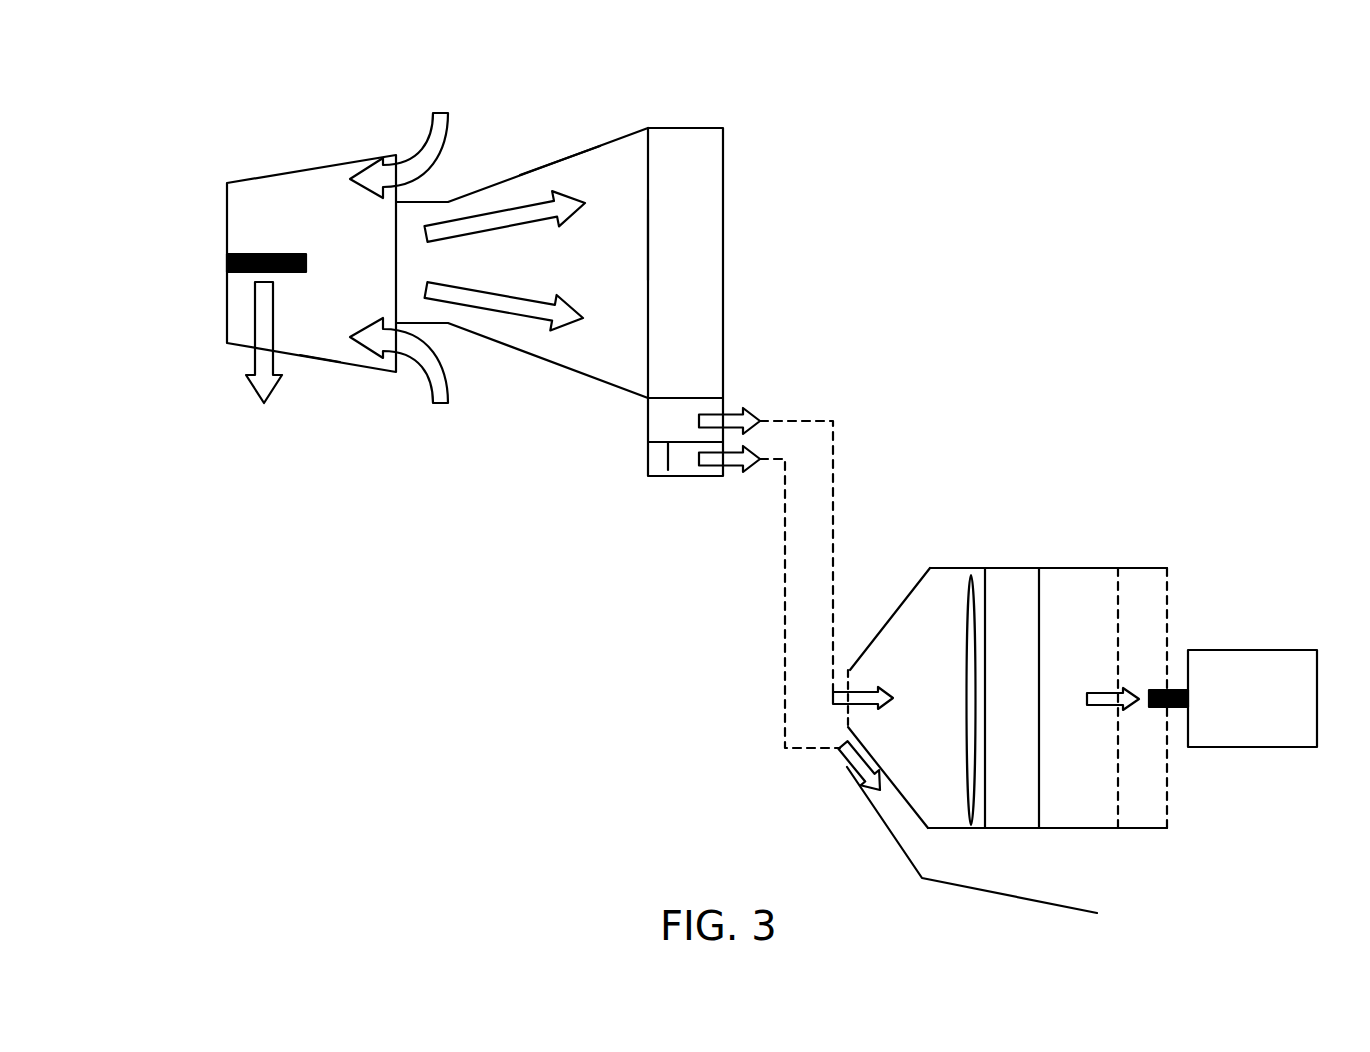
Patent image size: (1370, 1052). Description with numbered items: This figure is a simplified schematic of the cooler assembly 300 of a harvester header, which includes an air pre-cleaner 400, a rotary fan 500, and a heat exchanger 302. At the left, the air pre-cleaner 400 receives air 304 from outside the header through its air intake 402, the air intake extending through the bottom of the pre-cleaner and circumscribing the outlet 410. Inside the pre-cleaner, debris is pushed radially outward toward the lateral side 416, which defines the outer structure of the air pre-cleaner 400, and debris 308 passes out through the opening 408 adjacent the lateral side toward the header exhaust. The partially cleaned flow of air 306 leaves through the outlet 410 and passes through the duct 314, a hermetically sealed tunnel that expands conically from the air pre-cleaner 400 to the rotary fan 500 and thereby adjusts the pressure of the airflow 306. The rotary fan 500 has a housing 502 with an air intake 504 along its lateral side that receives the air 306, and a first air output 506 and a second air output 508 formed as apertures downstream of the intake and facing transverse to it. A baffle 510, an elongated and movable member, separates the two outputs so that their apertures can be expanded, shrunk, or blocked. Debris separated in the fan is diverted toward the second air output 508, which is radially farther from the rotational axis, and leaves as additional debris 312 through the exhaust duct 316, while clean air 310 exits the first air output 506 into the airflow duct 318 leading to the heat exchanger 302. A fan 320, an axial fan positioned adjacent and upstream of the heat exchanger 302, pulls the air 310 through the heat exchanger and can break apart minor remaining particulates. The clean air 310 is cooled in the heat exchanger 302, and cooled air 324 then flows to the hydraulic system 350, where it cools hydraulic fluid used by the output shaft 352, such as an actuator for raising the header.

The cooler assembly 300 is at (1068, 200).
The heat exchanger 302 is at (1015, 590).
The air 304 is at (445, 115).
The flow of air 306 is at (515, 205).
The debris 308 is at (252, 390).
The flow of air cleaned by the rotary fan 310 is at (735, 407).
The additional debris 312 is at (734, 467).
The duct 314 is at (552, 163).
The exhaust duct 316 is at (870, 807).
The airflow duct 318 is at (905, 594).
The fan 320 is at (970, 588).
The cooled air 324 is at (1107, 707).
The hydraulic system 350 is at (1145, 592).
The output shaft 352 is at (1267, 641).
The air pre-cleaner 400 is at (240, 155).
The air intake 402 is at (397, 160).
The opening 408 is at (227, 262).
The outlet 410 is at (400, 268).
The lateral side 416 is at (318, 360).
The rotary fan 500 is at (778, 173).
The housing 502 is at (724, 128).
The air intake 504 is at (648, 240).
The first air output 506 is at (661, 421).
The second air output 508 is at (677, 466).
The baffle 510 is at (668, 443).